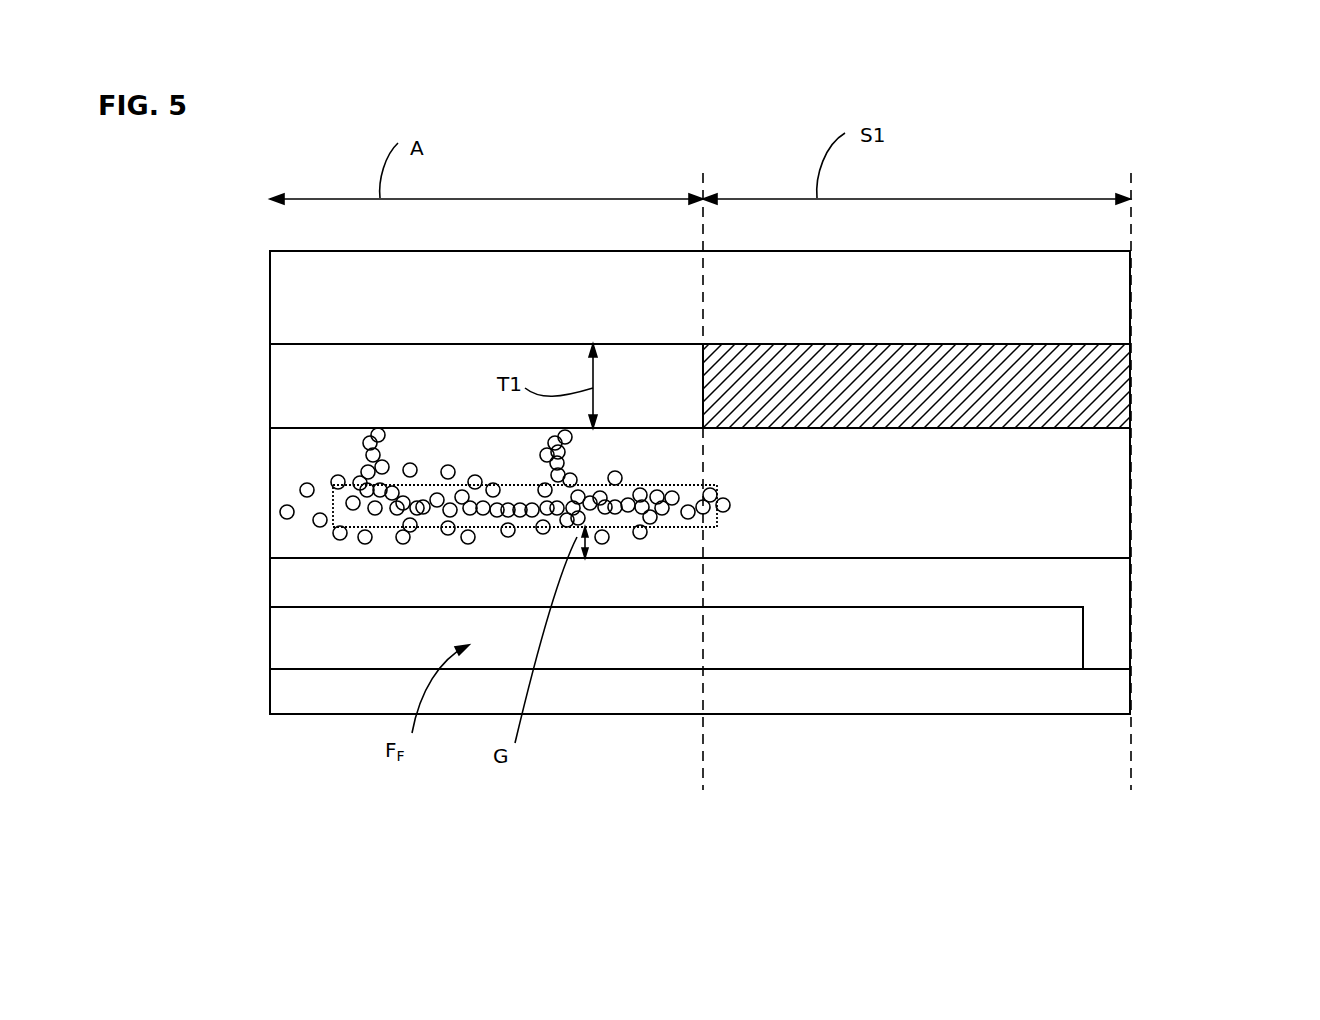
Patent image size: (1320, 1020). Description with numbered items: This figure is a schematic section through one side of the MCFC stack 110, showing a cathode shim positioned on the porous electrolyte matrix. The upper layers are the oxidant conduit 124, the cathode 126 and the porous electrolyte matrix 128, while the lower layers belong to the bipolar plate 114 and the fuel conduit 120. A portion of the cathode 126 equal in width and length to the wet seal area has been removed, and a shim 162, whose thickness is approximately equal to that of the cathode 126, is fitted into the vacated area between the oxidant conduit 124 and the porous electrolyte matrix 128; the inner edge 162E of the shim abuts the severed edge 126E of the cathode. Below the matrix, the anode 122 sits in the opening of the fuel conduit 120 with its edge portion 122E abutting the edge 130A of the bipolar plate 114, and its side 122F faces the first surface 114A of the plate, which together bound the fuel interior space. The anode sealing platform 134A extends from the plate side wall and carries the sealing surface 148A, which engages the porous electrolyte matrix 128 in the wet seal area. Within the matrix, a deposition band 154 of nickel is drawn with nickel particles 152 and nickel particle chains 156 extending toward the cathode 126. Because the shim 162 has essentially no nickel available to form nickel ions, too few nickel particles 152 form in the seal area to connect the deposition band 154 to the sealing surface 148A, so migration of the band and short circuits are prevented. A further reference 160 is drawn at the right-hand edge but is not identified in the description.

The MCFC stack 110 is at (1031, 129).
The edge region of display 160 is at (1295, 400).
The oxidant conduit 124 is at (1150, 280).
The inner edge of shim 162E is at (700, 362).
The shim 162 is at (1130, 413).
The porous electrolyte matrix 128 is at (1063, 457).
The cathode 126 is at (443, 363).
The severed edge of cathode 126E is at (703, 400).
The anode sealing platform 134A is at (895, 563).
The anode 122 is at (293, 583).
The edge portion of anode 122E is at (705, 570).
The side of anode 122F is at (368, 607).
The sealing surface 148A is at (970, 558).
The edge of bipolar plate 130A is at (703, 605).
The first surface of bipolar plate 114A is at (295, 667).
The bipolar plate 114 is at (307, 707).
The fuel conduit 120 is at (1143, 623).
The nickel particle chains 156 is at (547, 458).
The nickel particles 152 is at (368, 468).
The deposition band 154 is at (333, 504).